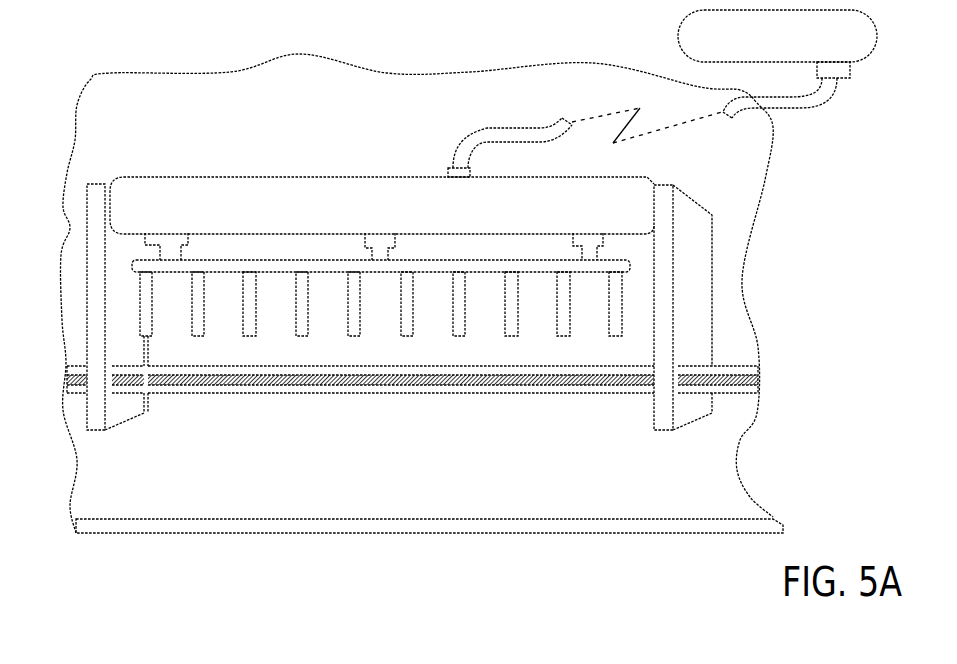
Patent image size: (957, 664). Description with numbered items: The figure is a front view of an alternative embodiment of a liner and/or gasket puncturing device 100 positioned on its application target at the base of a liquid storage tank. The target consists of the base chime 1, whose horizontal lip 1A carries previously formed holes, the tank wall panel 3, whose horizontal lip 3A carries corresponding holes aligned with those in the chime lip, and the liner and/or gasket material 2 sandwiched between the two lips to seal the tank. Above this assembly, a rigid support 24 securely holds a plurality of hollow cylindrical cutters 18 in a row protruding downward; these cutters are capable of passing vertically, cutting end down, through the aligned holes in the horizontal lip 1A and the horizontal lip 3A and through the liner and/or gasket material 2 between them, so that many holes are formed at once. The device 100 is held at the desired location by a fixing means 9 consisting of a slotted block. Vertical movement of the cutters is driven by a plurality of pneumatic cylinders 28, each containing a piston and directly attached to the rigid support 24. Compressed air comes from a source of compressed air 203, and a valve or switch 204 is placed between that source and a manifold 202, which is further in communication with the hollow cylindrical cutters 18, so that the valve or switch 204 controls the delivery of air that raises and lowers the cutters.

The base chime 1 is at (200, 489).
The horizontal lip of the base chime 1A is at (750, 395).
The liner and/or gasket material 2 is at (62, 380).
The tank wall panel 3 is at (108, 120).
The horizontal lip of the tank wall panel 3A is at (750, 362).
The fixing means 9 is at (687, 305).
The hollow cylindrical cutters 18 is at (300, 338).
The rigid support 24 is at (158, 273).
The pneumatic cylinders 28 is at (200, 247).
The liner and/or gasket puncturing device 100 is at (407, 102).
The manifold 202 is at (442, 165).
The source of compressed air 203 is at (796, 50).
The valve or switch 204 is at (817, 68).